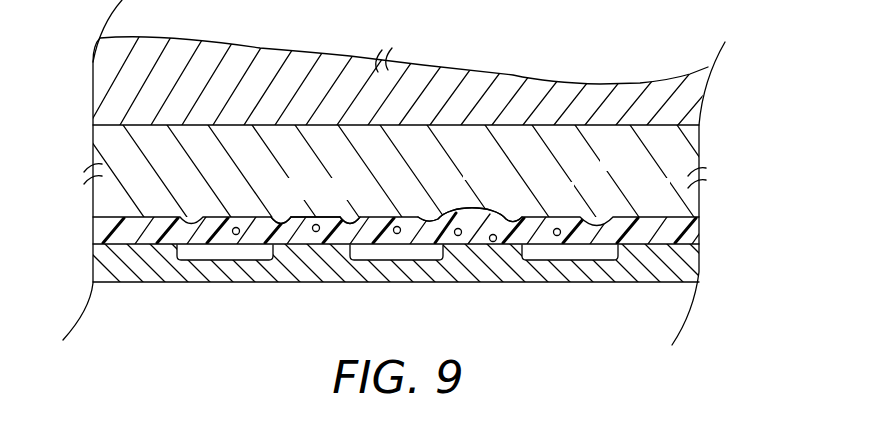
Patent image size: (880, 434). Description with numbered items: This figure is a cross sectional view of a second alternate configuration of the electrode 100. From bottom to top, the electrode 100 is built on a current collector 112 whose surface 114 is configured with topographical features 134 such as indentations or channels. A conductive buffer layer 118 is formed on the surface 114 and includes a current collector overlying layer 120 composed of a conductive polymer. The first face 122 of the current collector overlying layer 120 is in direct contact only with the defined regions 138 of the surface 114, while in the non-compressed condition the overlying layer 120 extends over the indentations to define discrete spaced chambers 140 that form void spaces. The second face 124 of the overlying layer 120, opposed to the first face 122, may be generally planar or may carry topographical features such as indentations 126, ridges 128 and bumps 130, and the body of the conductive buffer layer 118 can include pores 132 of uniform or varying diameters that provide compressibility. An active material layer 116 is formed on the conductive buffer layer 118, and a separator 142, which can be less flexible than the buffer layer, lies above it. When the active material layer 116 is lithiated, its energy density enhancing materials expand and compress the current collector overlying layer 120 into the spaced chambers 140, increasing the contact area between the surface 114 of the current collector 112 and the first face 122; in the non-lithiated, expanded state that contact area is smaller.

The electrode 100 is at (746, 89).
The current collector 112 is at (100, 262).
The surface 114 is at (283, 217).
The active material layer 116 is at (632, 168).
The conductive buffer layer 118 is at (692, 238).
The current collector overlying layer 120 is at (653, 226).
The first face 122 is at (395, 250).
The second face 124 is at (110, 218).
The indentations 126 is at (358, 217).
The ridges 128 is at (348, 217).
The bumps 130 is at (476, 207).
The pores 132 is at (557, 228).
The topographical features 134 is at (567, 262).
The defined regions 138 is at (495, 246).
The spaced chambers 140 is at (212, 250).
The separator 142 is at (635, 95).